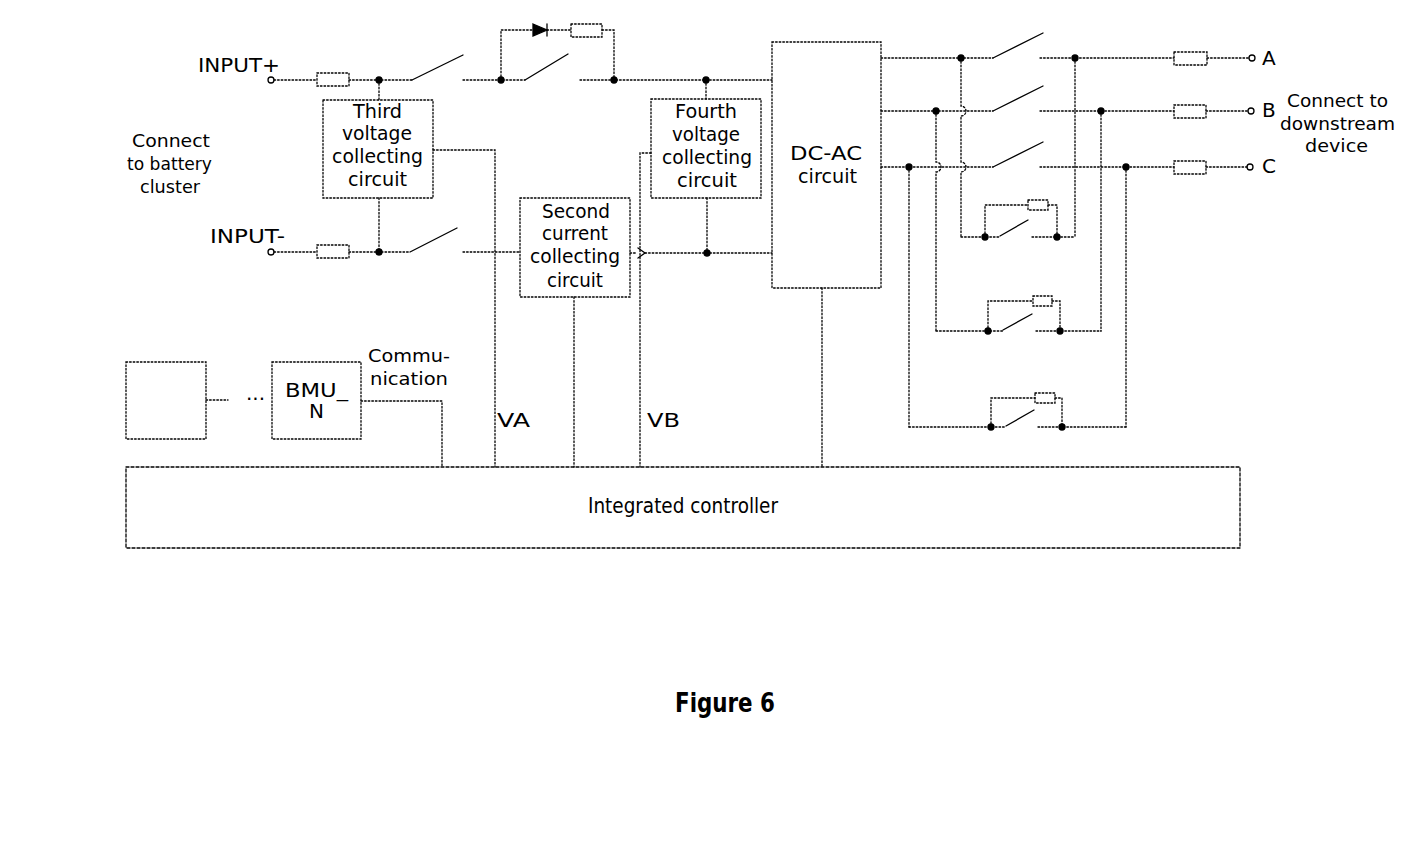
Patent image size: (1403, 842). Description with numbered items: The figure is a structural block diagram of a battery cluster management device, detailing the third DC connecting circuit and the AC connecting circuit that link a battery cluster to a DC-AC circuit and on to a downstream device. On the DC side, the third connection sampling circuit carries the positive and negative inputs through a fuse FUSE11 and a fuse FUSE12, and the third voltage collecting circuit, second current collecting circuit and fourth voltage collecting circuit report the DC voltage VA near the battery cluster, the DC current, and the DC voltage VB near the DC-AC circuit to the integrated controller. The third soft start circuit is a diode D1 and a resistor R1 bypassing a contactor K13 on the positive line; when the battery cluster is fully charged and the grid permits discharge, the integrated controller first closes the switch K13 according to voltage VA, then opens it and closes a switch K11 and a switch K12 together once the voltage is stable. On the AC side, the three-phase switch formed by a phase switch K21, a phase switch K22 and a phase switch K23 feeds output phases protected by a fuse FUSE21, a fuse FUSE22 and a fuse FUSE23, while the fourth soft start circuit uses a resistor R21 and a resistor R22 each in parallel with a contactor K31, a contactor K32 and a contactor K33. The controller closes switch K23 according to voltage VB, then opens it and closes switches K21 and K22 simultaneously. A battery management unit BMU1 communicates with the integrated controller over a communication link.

The fuse FUSE11 is at (345, 67).
The fuse FUSE12 is at (333, 269).
The switch K11 is at (437, 55).
The switch K12 is at (432, 230).
The contactor K13 is at (547, 83).
The diode D1 is at (536, 18).
The resistor R1 is at (586, 18).
The phase switch K21 is at (1013, 35).
The phase switch K22 is at (1014, 90).
The phase switch K23 is at (1014, 146).
The fuse FUSE21 is at (1184, 46).
The fuse FUSE22 is at (1185, 99).
The fuse FUSE23 is at (1185, 155).
The resistor R21 is at (1023, 302).
The resistor R22 is at (1025, 301).
The contactor K31 is at (1016, 241).
The contactor K32 is at (1019, 335).
The contactor K33 is at (1025, 432).
The battery management unit BMU1 is at (166, 400).